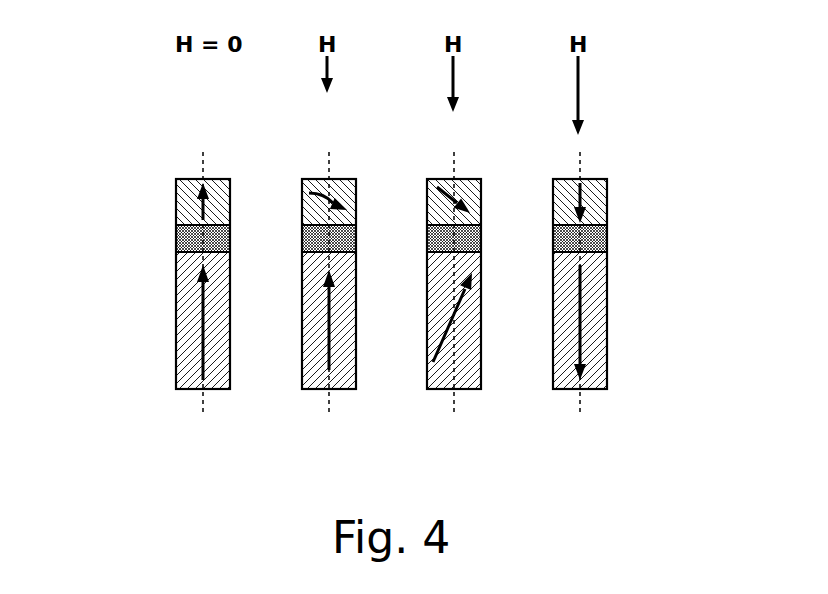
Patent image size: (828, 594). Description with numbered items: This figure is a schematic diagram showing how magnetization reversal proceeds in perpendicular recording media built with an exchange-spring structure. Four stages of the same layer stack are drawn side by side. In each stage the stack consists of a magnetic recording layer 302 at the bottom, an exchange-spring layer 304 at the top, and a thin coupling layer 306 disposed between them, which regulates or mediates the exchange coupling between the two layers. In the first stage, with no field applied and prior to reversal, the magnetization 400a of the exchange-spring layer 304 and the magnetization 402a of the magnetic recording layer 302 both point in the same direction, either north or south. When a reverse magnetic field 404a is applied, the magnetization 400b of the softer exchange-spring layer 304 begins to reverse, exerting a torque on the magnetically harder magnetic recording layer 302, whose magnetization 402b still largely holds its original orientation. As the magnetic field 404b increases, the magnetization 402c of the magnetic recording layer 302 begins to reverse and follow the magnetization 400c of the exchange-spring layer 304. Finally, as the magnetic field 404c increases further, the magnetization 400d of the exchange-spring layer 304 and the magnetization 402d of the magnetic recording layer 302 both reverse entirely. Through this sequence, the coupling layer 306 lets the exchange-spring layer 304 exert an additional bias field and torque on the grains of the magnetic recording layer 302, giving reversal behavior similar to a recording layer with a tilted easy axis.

The magnetic recording layer 302 is at (166, 315).
The exchange-spring layer 304 is at (166, 203).
The coupling layer 306 is at (166, 240).
The magnetization of the exchange-spring layer 400a is at (198, 206).
The magnetization of the exchange-spring layer 400b is at (320, 203).
The magnetization of the exchange-spring layer 400c is at (442, 205).
The magnetization of the exchange-spring layer 400d is at (578, 197).
The magnetization of the magnetic recording layer 402a is at (198, 328).
The magnetization of the magnetic recording layer 402b is at (328, 326).
The magnetization of the magnetic recording layer 402c is at (450, 319).
The magnetization of the magnetic recording layer 402d is at (578, 317).
The reverse magnetic field 404a is at (326, 70).
The magnetic field 404b is at (452, 78).
The magnetic field 404c is at (577, 88).